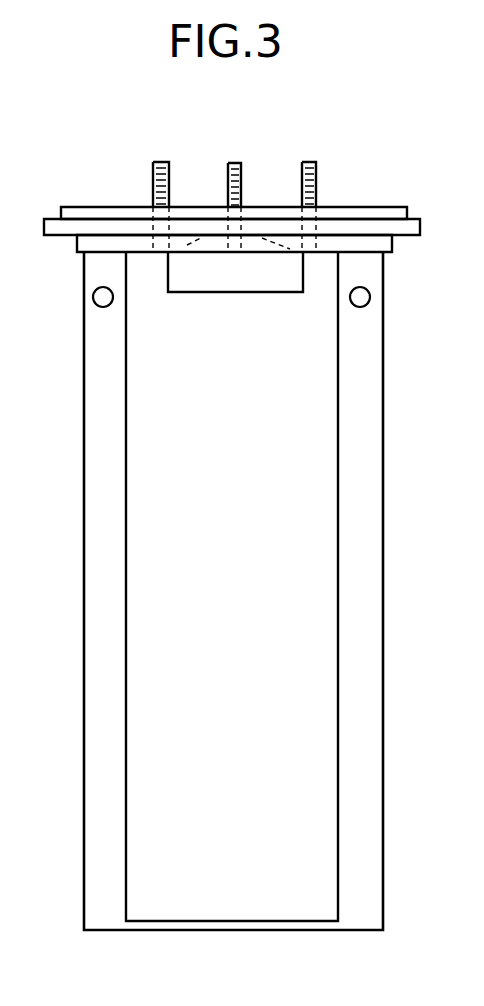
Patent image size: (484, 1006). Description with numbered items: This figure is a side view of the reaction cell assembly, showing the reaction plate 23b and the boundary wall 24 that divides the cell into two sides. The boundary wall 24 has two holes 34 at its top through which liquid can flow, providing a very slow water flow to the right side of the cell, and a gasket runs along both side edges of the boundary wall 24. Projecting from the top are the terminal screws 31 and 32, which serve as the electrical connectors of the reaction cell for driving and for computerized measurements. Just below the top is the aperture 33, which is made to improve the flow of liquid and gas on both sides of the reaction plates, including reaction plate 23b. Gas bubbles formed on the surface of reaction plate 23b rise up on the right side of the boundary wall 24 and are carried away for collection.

The reaction plate 23b is at (157, 600).
The boundary wall 24 is at (360, 573).
The terminal screw 31 is at (153, 185).
The terminal screw 32 is at (227, 192).
The aperture 33 is at (234, 268).
The hole 34 is at (103, 297).